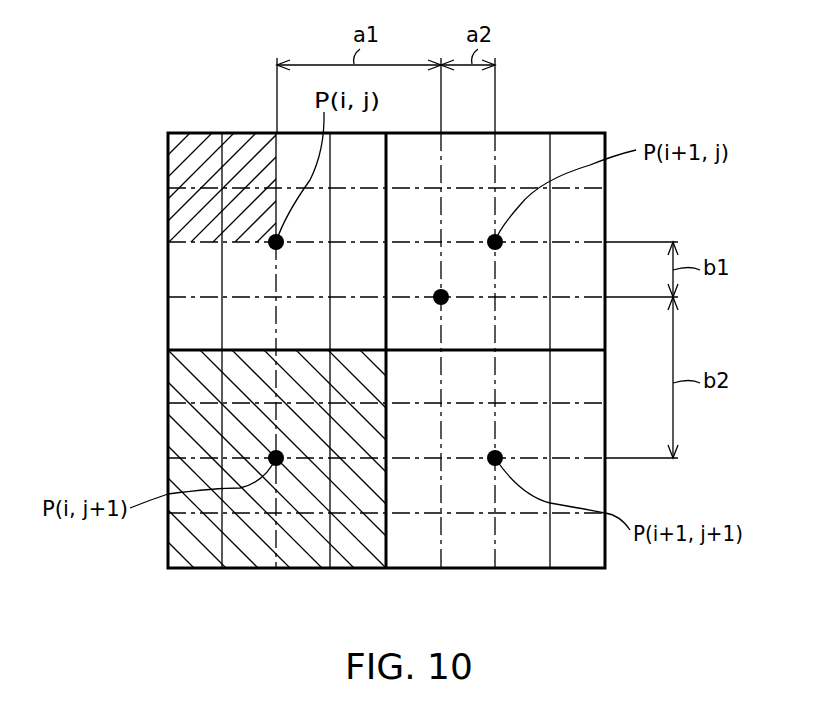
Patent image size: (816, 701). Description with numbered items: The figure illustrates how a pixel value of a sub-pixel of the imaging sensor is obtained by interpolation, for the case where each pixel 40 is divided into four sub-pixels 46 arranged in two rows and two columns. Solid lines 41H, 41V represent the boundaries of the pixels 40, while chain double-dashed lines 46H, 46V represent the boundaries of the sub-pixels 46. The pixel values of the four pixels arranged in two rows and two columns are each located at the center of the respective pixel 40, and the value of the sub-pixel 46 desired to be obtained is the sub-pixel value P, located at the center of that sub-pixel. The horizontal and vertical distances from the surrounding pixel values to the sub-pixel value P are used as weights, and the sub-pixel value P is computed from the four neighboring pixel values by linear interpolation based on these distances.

The pixel 40 is at (200, 537).
The horizontal solid line 41H is at (185, 350).
The vertical solid line 41V is at (386, 540).
The sub-pixel 46 is at (200, 155).
The horizontal chain double-dashed line 46H is at (575, 462).
The vertical chain double-dashed line 46V is at (495, 540).
The sub-pixel value P is at (441, 297).